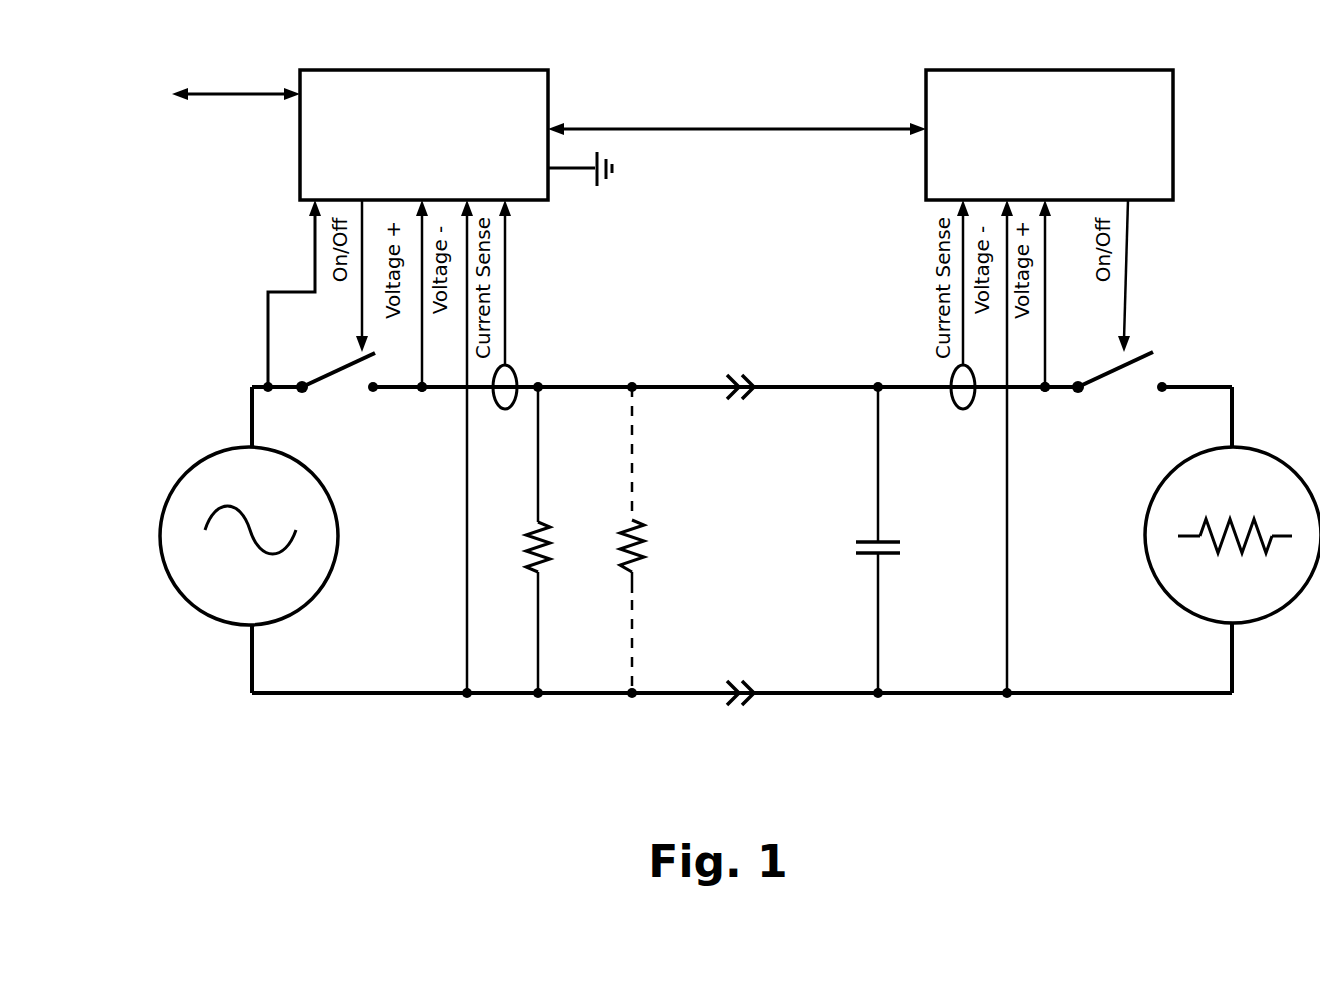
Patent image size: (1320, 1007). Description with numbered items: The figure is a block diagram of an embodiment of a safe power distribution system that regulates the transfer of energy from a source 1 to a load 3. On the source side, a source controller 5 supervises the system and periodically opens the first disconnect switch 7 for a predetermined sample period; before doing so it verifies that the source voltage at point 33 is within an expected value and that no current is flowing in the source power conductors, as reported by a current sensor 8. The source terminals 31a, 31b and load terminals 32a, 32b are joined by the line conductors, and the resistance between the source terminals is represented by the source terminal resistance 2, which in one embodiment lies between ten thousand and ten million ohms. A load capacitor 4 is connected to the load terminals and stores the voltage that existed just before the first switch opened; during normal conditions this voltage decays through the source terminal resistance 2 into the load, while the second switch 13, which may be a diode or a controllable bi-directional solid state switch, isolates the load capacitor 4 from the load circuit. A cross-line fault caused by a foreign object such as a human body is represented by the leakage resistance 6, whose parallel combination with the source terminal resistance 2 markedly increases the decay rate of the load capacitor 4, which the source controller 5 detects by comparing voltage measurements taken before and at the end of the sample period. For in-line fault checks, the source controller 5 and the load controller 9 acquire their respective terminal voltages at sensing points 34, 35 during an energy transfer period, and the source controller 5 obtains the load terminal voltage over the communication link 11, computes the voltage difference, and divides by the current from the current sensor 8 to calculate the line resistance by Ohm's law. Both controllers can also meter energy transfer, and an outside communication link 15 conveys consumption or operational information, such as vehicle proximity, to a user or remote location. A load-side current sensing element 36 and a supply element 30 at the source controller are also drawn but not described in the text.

The source 1 is at (218, 434).
The source terminal resistance Rsrc 2 is at (562, 530).
The load 3 is at (1150, 590).
The capacitor Cload 4 is at (857, 530).
The source controller 5 is at (397, 57).
The leakage resistance Rleak 6 is at (655, 530).
The S1 disconnect switch 7 is at (350, 377).
The current sensor 8 is at (490, 412).
The load controller 9 is at (1196, 118).
The communication link 11 is at (737, 142).
The switch S2 13 is at (1113, 390).
The outside communication link 15 is at (225, 80).
The battery / power supply 30 is at (606, 188).
The source terminal 31a is at (717, 376).
The source terminal 31b is at (715, 705).
The load terminal 32a is at (763, 376).
The load terminal 32b is at (763, 705).
The source voltage point 33 is at (303, 236).
The sensing point 34 is at (418, 398).
The sensing point 35 is at (1044, 400).
The load current sense 36 is at (950, 423).